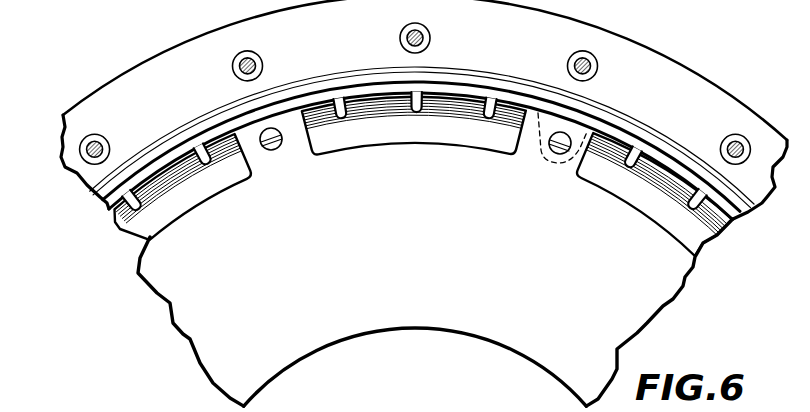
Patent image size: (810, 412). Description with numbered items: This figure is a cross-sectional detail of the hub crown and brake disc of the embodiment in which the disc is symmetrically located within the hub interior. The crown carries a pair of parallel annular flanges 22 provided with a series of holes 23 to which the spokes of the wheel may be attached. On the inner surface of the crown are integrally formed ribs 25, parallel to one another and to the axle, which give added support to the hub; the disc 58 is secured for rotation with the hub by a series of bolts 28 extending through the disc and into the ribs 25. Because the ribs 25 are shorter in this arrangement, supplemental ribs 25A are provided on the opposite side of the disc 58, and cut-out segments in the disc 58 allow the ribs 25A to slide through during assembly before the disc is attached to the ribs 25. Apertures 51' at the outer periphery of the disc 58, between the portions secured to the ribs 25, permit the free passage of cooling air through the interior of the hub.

The annular flanges 22 is at (340, 43).
The holes 23 is at (722, 147).
The ribs 25 is at (547, 160).
The supplemental ribs 25A is at (490, 108).
The bolts 28 is at (271, 150).
The apertures 51' is at (424, 182).
The disc 58 is at (200, 333).